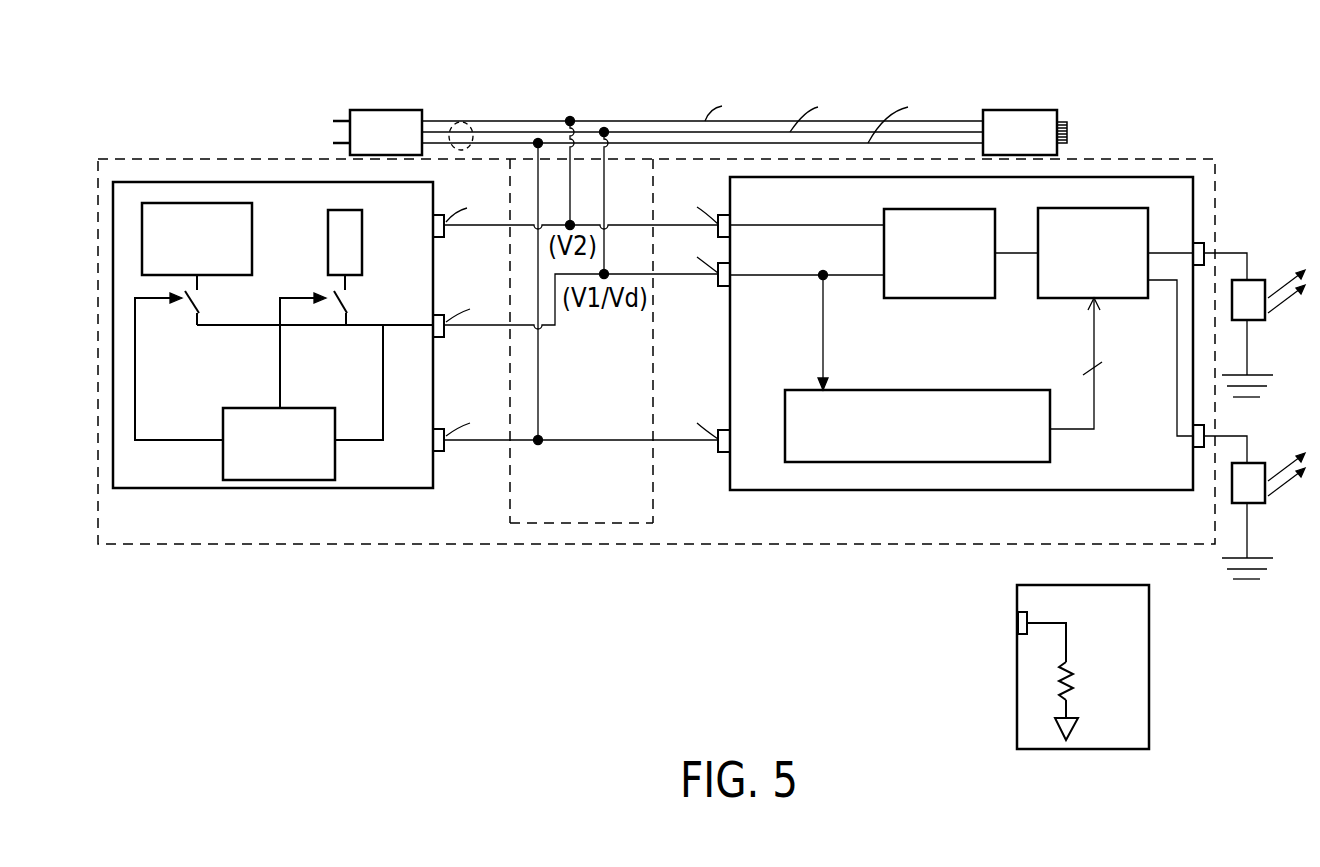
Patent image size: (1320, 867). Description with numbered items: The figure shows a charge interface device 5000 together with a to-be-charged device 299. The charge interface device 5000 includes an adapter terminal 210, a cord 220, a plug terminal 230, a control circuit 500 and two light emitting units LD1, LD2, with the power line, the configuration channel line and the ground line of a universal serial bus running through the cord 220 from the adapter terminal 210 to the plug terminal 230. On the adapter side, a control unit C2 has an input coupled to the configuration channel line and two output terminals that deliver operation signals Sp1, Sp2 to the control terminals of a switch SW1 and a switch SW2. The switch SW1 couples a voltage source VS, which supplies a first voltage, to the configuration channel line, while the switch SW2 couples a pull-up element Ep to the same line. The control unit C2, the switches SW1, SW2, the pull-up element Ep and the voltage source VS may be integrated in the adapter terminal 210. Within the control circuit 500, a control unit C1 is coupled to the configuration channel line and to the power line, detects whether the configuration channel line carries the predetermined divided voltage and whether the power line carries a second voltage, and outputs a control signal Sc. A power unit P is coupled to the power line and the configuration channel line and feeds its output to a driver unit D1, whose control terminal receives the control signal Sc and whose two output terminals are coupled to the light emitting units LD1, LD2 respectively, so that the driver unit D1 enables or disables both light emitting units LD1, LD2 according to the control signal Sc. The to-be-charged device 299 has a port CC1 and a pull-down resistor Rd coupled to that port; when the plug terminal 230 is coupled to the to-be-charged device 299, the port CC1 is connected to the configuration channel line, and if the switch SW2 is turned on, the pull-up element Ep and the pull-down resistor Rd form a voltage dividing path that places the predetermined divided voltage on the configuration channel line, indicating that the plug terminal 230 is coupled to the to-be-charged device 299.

The charge interface device 5000 is at (220, 76).
The adapter terminal 210 is at (406, 99).
The cord 220 is at (461, 122).
The plug terminal 230 is at (1020, 110).
The control circuit 500 is at (665, 546).
The to-be-charged device 299 is at (1107, 667).
The control unit C1 is at (930, 333).
The control unit C2 is at (310, 360).
The voltage source VS is at (270, 236).
The pull-up element Ep is at (380, 236).
The switch SW1 is at (218, 300).
The switch SW2 is at (368, 300).
The operation signal Sp1 is at (179, 366).
The operation signal Sp2 is at (304, 350).
The power unit P is at (942, 298).
The driver unit D1 is at (1127, 298).
The control signal Sc is at (1092, 363).
The light emitting unit LD1 is at (1287, 263).
The light emitting unit LD2 is at (1285, 448).
The port CC1 is at (1023, 607).
The pull-down resistor Rd is at (1081, 701).